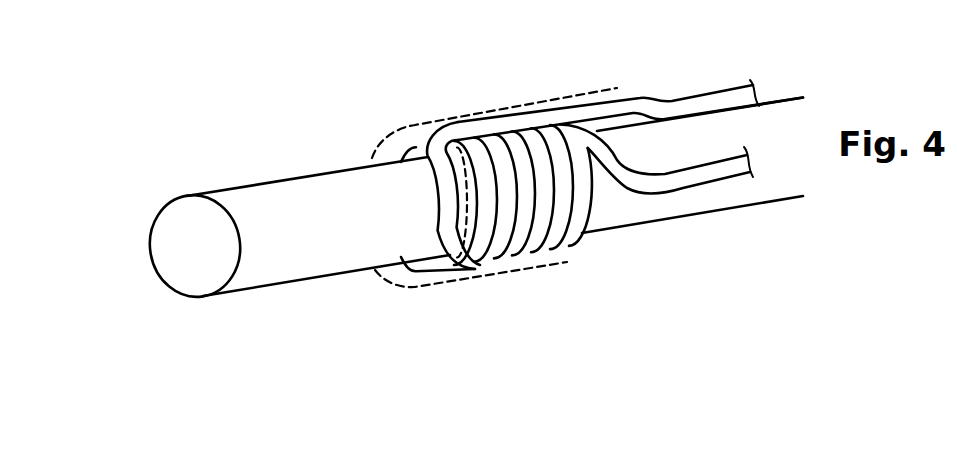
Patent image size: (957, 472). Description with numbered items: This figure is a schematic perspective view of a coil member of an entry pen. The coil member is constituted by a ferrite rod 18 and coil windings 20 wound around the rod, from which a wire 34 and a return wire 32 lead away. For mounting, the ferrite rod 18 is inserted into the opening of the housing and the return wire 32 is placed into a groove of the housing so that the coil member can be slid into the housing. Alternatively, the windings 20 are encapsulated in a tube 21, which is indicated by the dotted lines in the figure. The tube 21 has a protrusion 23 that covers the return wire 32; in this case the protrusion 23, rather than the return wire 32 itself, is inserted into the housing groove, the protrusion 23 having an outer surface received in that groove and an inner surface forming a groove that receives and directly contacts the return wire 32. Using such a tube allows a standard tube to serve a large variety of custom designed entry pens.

The ferrite rod 18 is at (188, 246).
The coil windings 20 is at (567, 241).
The tube 21 is at (490, 277).
The protrusion 23 is at (436, 120).
The return wire 32 is at (688, 100).
The wire 34 is at (692, 177).